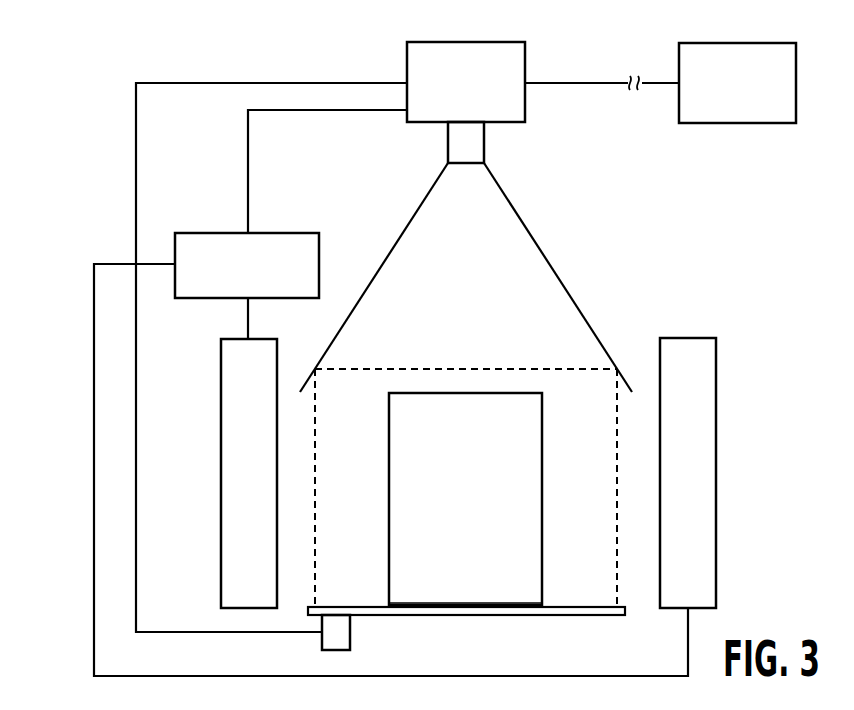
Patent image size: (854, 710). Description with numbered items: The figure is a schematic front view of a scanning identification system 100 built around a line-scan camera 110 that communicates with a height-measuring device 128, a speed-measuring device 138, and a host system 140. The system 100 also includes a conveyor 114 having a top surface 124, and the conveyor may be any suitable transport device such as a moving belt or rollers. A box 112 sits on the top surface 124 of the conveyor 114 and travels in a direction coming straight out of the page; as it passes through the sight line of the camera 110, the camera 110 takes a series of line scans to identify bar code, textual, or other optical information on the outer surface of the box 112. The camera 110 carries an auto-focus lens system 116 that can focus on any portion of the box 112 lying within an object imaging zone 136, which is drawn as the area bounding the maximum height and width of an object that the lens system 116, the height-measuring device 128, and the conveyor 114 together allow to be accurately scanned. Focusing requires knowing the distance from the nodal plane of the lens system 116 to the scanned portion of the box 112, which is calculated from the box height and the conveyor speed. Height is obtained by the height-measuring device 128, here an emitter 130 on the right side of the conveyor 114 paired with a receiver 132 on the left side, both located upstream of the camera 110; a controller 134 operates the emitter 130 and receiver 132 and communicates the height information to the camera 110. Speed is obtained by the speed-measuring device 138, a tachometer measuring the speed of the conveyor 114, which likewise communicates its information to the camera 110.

The scanning identification system 100 is at (116, 238).
The line-scan camera 110 is at (513, 40).
The box 112 is at (488, 514).
The conveyor 114 is at (533, 611).
The auto-focus lens system 116 is at (484, 141).
The top surface 124 is at (363, 600).
The height-measuring device 128 is at (722, 322).
The emitter 130 is at (716, 358).
The receiver 132 is at (221, 362).
The controller 134 is at (284, 233).
The object imaging zone 136 is at (528, 369).
The speed-measuring device 138 is at (335, 636).
The host system 140 is at (736, 42).